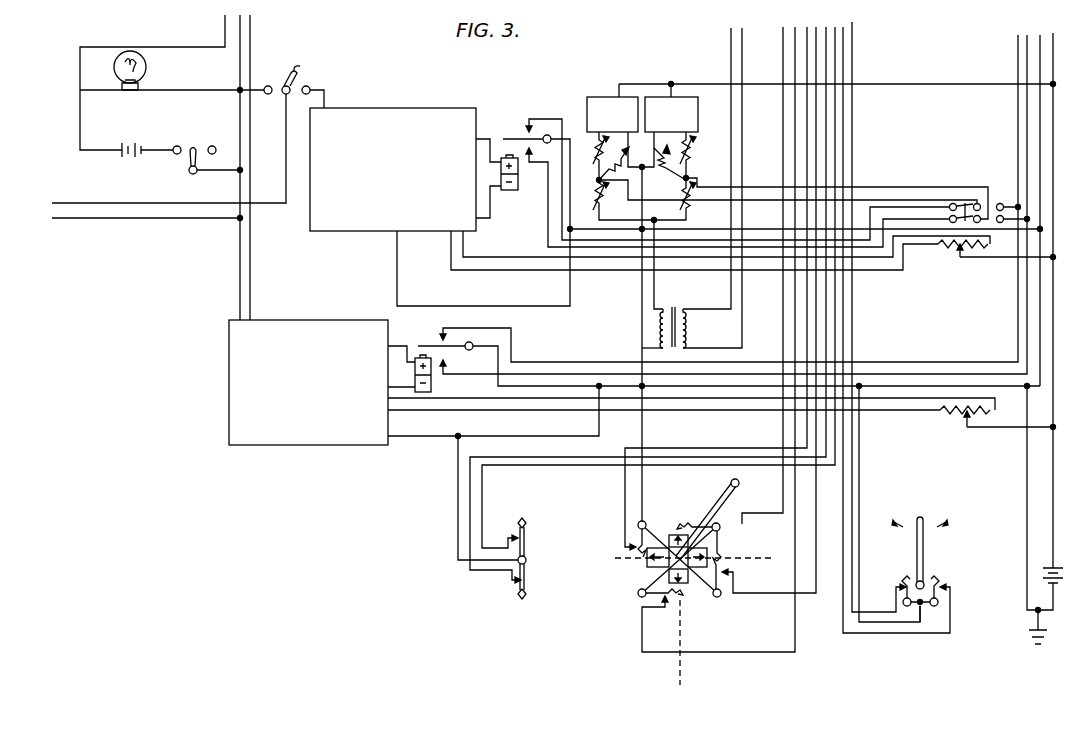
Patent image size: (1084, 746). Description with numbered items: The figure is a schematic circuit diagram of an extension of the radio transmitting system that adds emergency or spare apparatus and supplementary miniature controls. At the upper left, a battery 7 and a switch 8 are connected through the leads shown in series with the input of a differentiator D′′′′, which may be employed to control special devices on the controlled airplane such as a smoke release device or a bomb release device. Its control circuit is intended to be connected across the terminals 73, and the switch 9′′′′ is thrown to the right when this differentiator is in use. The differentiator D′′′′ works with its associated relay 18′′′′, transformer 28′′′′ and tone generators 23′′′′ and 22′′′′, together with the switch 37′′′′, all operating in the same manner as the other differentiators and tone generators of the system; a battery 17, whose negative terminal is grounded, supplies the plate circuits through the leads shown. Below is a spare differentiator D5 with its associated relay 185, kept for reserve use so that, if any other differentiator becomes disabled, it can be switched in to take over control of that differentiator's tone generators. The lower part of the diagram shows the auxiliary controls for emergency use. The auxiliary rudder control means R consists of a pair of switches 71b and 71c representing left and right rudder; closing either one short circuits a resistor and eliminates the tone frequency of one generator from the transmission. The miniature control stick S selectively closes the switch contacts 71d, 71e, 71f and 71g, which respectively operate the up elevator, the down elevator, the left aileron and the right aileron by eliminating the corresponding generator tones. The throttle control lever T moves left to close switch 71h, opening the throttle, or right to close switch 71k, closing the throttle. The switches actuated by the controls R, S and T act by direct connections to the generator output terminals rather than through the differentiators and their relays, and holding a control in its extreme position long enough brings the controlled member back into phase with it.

The battery 7 is at (121, 158).
The switch 8 is at (186, 164).
The switch 9′′′′ is at (294, 83).
The terminals 73 is at (49, 210).
The differentiator D′′′′ is at (351, 232).
The relay 18′′′′ is at (506, 190).
The tone generator 23′′′′ is at (598, 97).
The tone generator 22′′′′ is at (690, 78).
The transformer 28′′′′ is at (662, 334).
The switch 37′′′′ is at (986, 180).
The spare differentiator D5 is at (232, 385).
The relay 185 is at (433, 383).
The auxiliary rudder control means R is at (529, 558).
The switch 71c is at (520, 519).
The switch 71b is at (519, 594).
The switch contact 71f is at (630, 547).
The switch contact 71d is at (700, 524).
The switch contact 71g is at (721, 556).
The switch contact 71e is at (680, 599).
The miniature control stick S is at (747, 481).
The throttle control lever T is at (928, 515).
The switch 71h is at (904, 579).
The switch 71k is at (941, 581).
The battery 17 is at (1041, 578).